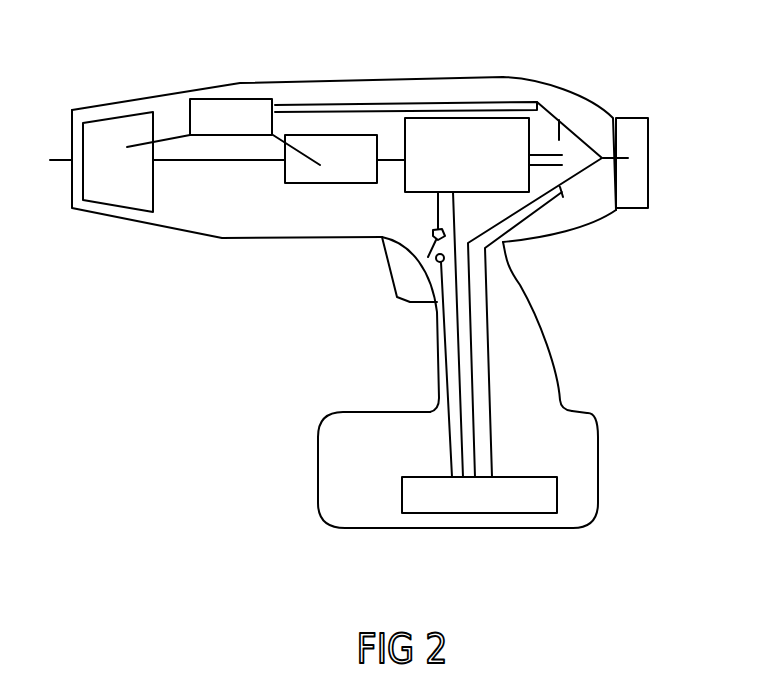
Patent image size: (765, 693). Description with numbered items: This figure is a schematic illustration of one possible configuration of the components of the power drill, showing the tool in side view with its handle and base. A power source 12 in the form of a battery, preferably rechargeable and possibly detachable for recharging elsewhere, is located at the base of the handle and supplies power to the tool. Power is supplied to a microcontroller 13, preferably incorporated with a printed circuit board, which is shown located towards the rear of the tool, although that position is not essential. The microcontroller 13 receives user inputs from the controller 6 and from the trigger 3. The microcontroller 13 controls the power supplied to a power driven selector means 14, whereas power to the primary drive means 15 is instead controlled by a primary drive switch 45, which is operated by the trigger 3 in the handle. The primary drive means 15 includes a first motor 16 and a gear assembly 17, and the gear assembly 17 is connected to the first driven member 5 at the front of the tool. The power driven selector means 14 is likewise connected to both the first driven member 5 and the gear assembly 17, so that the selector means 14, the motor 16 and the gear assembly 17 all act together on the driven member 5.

The trigger 3 is at (412, 277).
The first driven member 5 is at (118, 128).
The controller 6 is at (638, 135).
The power source 12 is at (532, 497).
The microcontroller 13 is at (578, 150).
The power driven selector means 14 is at (228, 113).
The primary drive means 15 is at (290, 57).
The first motor 16 is at (497, 132).
The gear assembly 17 is at (302, 177).
The primary drive switch 45 is at (418, 232).